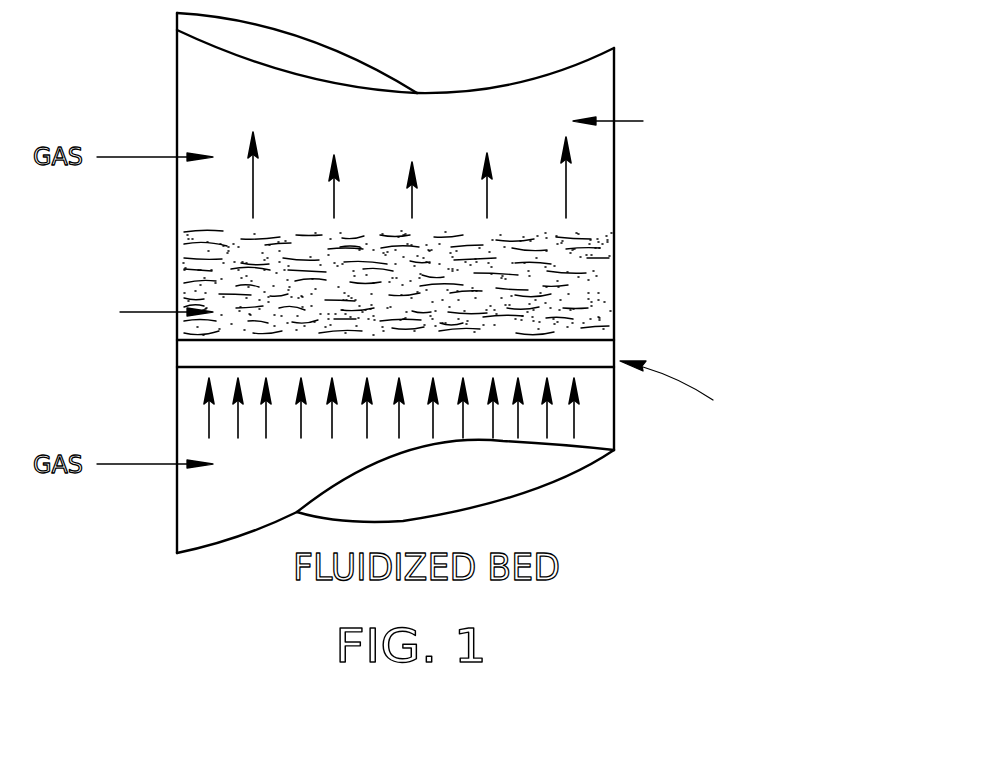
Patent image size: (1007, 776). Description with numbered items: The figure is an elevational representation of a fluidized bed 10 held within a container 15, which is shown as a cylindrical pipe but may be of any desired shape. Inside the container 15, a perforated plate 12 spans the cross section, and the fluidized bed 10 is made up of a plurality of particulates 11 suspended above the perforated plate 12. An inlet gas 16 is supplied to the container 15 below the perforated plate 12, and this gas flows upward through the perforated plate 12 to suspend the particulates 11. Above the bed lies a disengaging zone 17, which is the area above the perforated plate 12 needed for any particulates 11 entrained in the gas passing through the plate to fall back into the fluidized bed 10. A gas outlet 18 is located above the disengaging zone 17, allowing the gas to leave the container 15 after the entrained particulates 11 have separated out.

The fluidized bed 10 is at (580, 259).
The particulates 11 is at (342, 245).
The perforated plate 12 is at (603, 338).
The container 15 is at (618, 73).
The inlet gas 16 is at (260, 467).
The disengaging zone 17 is at (540, 113).
The gas outlet 18 is at (338, 173).